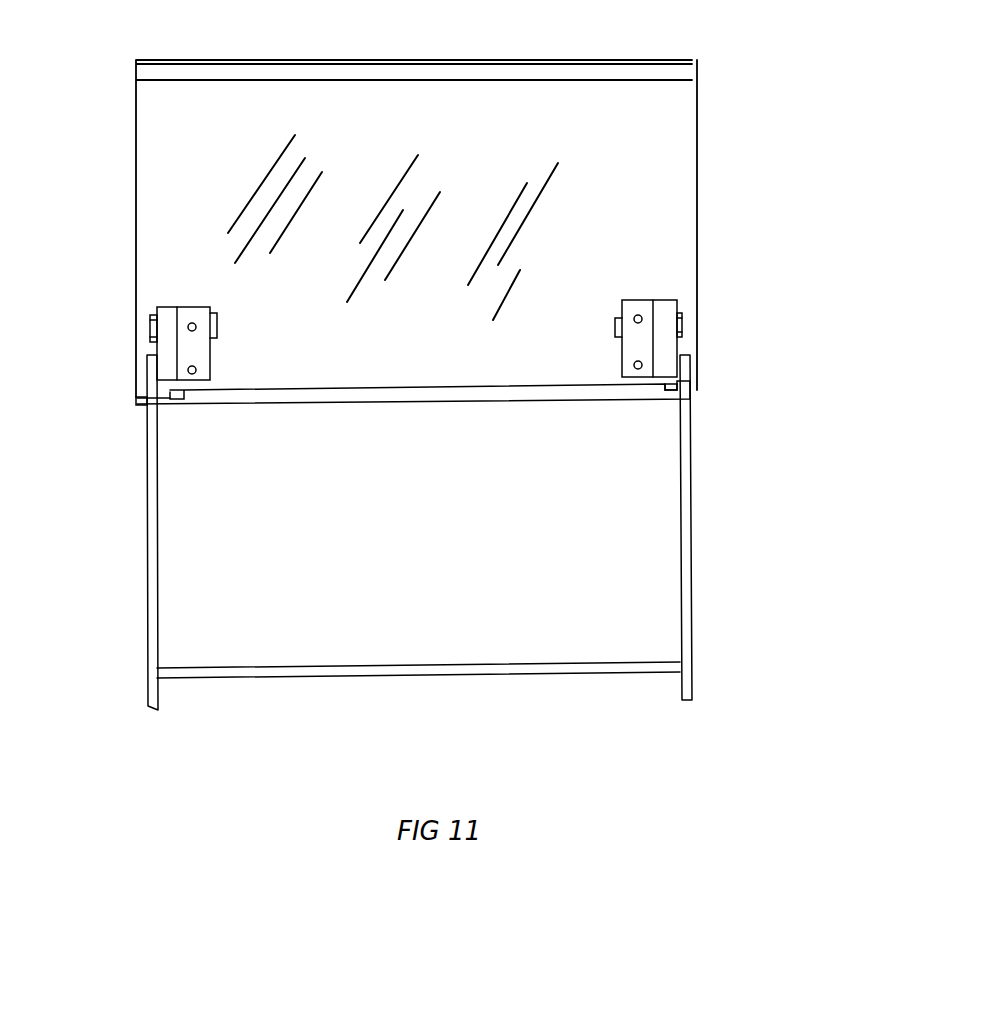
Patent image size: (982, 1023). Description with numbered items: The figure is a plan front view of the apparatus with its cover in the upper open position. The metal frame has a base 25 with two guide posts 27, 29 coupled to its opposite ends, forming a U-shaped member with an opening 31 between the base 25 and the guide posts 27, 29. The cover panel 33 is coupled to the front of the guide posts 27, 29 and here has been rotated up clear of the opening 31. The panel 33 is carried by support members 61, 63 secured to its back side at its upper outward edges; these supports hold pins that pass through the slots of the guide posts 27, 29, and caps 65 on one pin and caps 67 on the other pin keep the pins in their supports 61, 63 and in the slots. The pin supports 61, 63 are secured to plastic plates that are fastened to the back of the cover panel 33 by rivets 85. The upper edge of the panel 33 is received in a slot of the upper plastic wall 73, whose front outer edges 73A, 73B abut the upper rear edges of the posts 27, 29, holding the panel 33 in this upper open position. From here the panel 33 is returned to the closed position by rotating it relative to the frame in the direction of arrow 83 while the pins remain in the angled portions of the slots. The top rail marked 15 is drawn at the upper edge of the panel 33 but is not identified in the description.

The frame 15 is at (630, 72).
The glass panel 33 is at (178, 203).
The left hinge bracket 61 is at (166, 345).
The right hinge bracket 63 is at (660, 352).
The hinge 65 is at (230, 302).
The hinge 67 is at (620, 326).
The hinge pin 83 is at (661, 308).
The hinge pin 85 is at (186, 301).
The cross bar 73 is at (205, 396).
The cross bar end tab 73A is at (140, 396).
The cross bar end tab 73B is at (690, 389).
The left leg 27 is at (150, 583).
The right leg 29 is at (693, 549).
The bottom bar 25 is at (585, 673).
The lower panel 31 is at (380, 600).